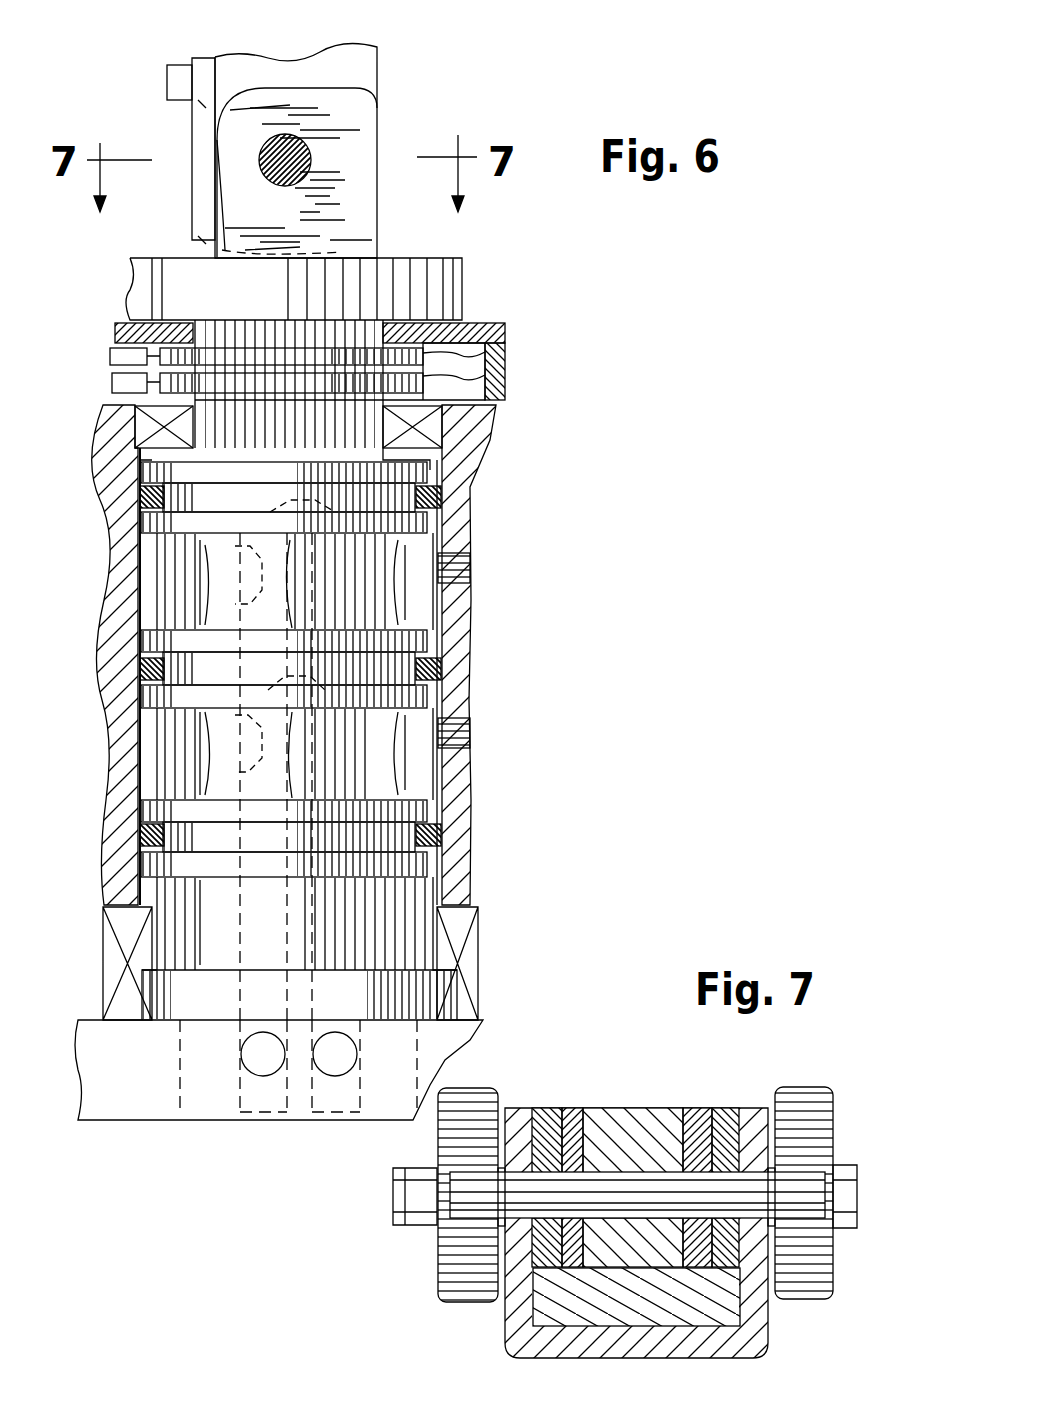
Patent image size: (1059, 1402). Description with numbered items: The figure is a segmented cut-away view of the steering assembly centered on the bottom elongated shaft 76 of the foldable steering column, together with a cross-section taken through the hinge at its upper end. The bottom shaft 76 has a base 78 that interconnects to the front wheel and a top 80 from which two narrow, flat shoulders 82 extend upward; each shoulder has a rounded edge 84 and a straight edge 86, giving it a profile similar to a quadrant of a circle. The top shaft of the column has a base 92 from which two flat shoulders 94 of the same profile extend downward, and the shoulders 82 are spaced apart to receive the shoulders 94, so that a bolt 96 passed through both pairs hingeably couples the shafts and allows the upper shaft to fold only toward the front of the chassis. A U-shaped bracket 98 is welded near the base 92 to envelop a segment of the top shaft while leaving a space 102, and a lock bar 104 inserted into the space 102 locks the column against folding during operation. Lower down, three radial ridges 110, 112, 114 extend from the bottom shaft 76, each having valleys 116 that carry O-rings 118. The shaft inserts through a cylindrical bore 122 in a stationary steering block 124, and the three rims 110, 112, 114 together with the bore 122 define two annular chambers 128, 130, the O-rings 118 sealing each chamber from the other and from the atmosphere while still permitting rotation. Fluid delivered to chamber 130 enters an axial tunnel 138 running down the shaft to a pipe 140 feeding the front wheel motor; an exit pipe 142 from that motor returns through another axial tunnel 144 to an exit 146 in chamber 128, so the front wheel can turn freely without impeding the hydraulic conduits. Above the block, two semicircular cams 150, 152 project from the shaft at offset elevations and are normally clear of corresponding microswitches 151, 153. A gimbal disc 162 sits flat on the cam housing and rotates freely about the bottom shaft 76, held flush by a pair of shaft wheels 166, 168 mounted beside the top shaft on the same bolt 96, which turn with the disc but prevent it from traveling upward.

In FIG. 6, the bottom elongated shaft 76 is at (92, 600).
In FIG. 6, the base 78 is at (95, 1035).
In FIG. 6, the top 80 is at (233, 320).
In FIG. 6, the shoulders 82 is at (370, 128).
In FIG. 7, the shoulders 82 is at (740, 1108).
In FIG. 6, the rounded edge 84 is at (253, 96).
In FIG. 6, the straight edge 86 is at (380, 153).
In FIG. 6, the base 92 is at (367, 71).
In FIG. 6, the shoulders 94 is at (240, 193).
In FIG. 7, the shoulders 94 is at (703, 1108).
In FIG. 6, the bolt 96 is at (312, 164).
In FIG. 7, the bolt 96 is at (395, 1200).
In FIG. 6, the U-shaped bracket 98 is at (182, 67).
In FIG. 7, the U-shaped bracket 98 is at (760, 1340).
In FIG. 7, the space 102 is at (555, 1300).
In FIG. 6, the lock bar 104 is at (203, 68).
In FIG. 7, the lock bar 104 is at (585, 1315).
In FIG. 6, the radial ridge 110 is at (210, 540).
In FIG. 6, the radial ridge 112 is at (210, 710).
In FIG. 6, the radial ridge 114 is at (200, 880).
In FIG. 6, the valleys 116 is at (205, 475).
In FIG. 6, the O-rings 118 is at (150, 495).
In FIG. 6, the cylindrical bore 122 is at (460, 690).
In FIG. 6, the steering block 124 is at (122, 572).
In FIG. 6, the annular chamber 128 is at (430, 598).
In FIG. 6, the annular chamber 130 is at (428, 770).
In FIG. 6, the axial tunnel 138 is at (190, 740).
In FIG. 6, the pipe 140 is at (263, 1076).
In FIG. 6, the exit pipe 142 is at (335, 1076).
In FIG. 6, the axial tunnel 144 is at (445, 720).
In FIG. 6, the exit 146 is at (445, 556).
In FIG. 6, the semicircular cam 150 is at (455, 345).
In FIG. 6, the microswitch 151 is at (118, 340).
In FIG. 6, the semicircular cam 152 is at (492, 376).
In FIG. 6, the microswitch 153 is at (490, 320).
In FIG. 6, the gimbal disc 162 is at (147, 277).
In FIG. 7, the shaft wheel 166 is at (800, 1100).
In FIG. 7, the shaft wheel 168 is at (450, 1262).